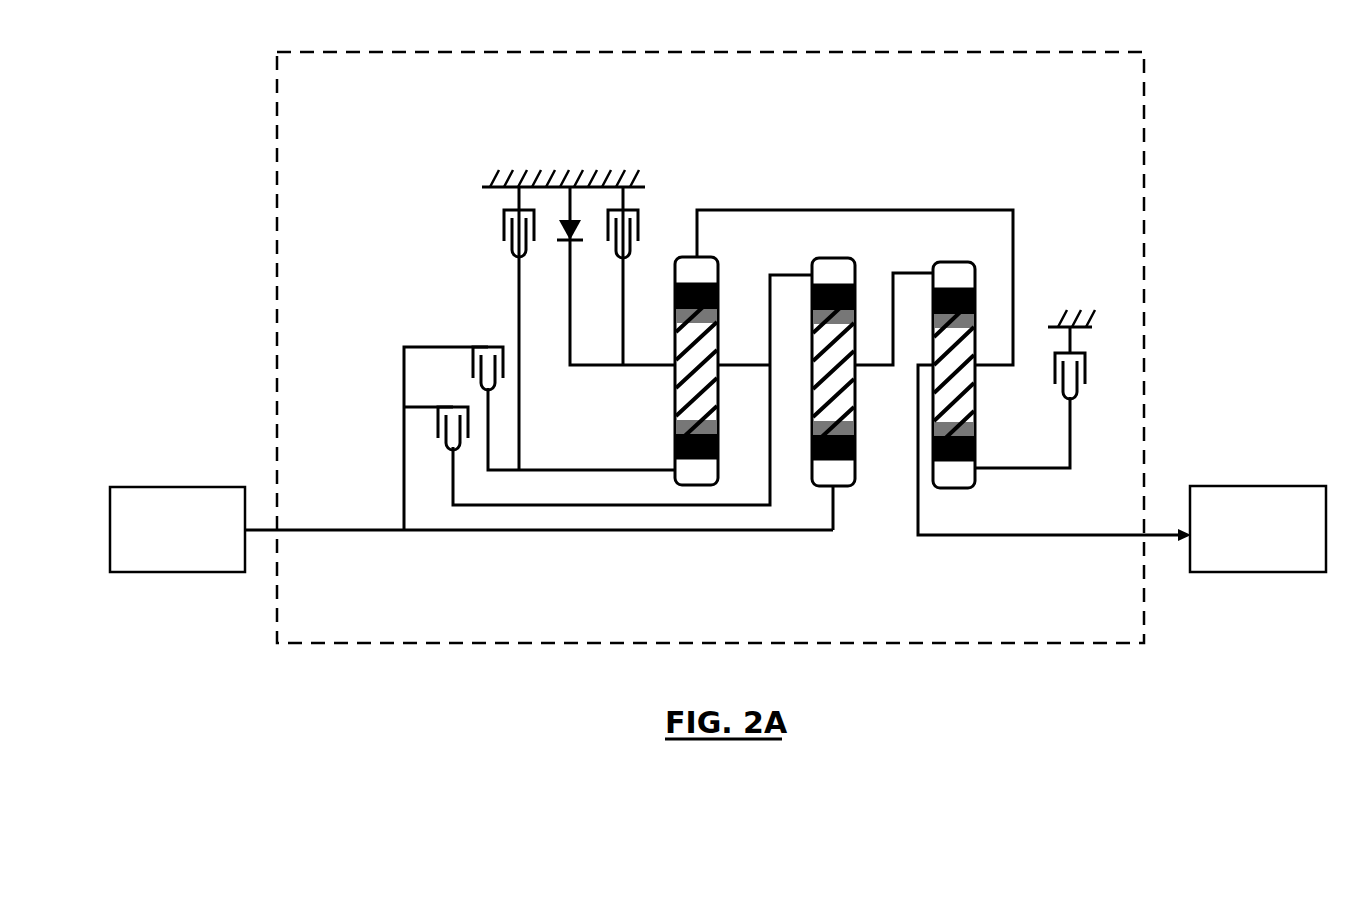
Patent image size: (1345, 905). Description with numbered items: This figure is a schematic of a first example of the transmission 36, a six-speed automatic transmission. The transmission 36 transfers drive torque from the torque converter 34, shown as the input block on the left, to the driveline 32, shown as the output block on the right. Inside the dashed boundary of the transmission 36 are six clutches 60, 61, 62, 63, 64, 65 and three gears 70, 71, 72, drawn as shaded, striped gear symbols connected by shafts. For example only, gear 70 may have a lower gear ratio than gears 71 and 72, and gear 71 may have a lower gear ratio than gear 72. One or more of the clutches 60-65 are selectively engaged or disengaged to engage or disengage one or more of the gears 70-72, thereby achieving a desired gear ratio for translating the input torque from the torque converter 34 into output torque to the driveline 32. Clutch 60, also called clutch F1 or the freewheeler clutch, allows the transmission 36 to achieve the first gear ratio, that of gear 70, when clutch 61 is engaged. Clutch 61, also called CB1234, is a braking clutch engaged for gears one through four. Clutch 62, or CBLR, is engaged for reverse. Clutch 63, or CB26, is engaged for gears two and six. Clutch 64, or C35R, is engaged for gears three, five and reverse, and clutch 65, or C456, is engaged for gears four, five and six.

The driveline 32 is at (1260, 486).
The torque converter 34 is at (175, 487).
The transmission 36 is at (712, 52).
The freewheeler clutch 60 is at (1086, 373).
The clutch 61 is at (568, 244).
The clutch 62 is at (639, 232).
The clutch 63 is at (504, 231).
The clutch 64 is at (488, 346).
The clutch 65 is at (453, 406).
The gear 70 is at (976, 428).
The gear 71 is at (856, 423).
The gear 72 is at (675, 423).